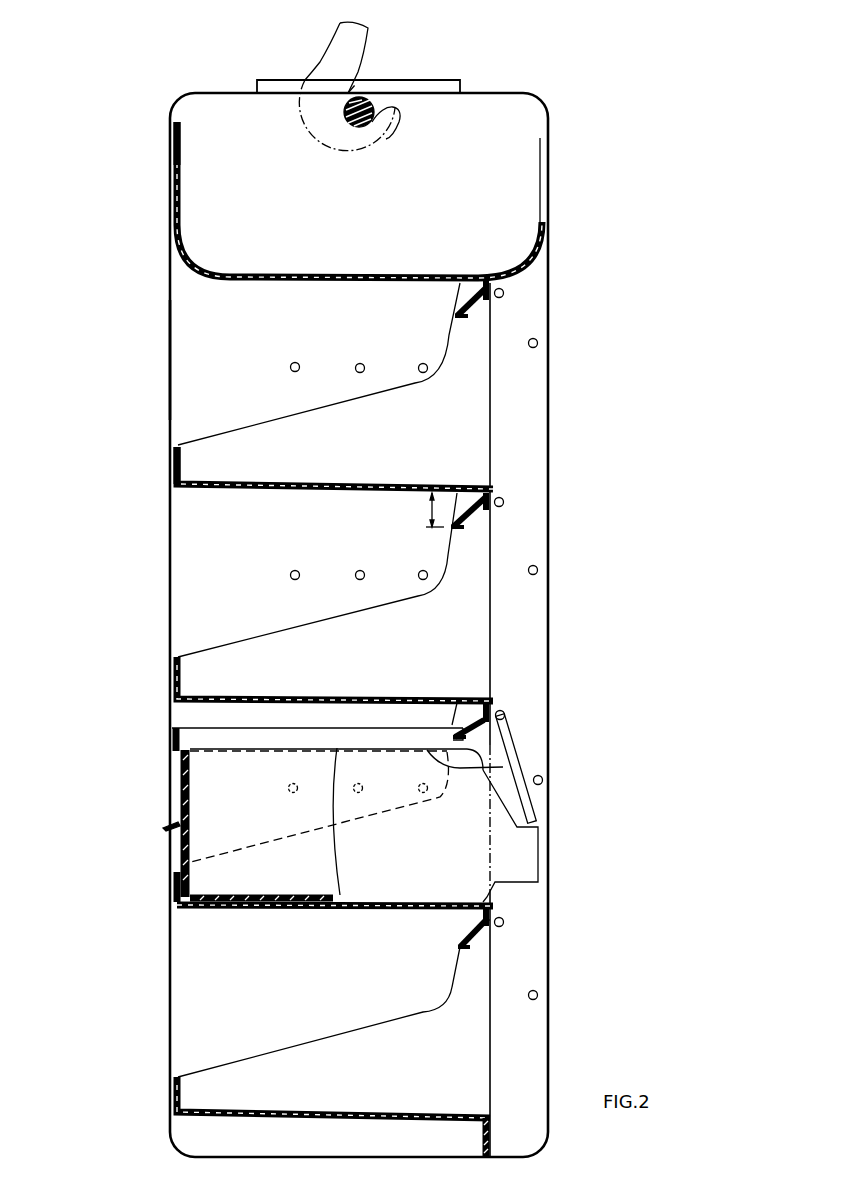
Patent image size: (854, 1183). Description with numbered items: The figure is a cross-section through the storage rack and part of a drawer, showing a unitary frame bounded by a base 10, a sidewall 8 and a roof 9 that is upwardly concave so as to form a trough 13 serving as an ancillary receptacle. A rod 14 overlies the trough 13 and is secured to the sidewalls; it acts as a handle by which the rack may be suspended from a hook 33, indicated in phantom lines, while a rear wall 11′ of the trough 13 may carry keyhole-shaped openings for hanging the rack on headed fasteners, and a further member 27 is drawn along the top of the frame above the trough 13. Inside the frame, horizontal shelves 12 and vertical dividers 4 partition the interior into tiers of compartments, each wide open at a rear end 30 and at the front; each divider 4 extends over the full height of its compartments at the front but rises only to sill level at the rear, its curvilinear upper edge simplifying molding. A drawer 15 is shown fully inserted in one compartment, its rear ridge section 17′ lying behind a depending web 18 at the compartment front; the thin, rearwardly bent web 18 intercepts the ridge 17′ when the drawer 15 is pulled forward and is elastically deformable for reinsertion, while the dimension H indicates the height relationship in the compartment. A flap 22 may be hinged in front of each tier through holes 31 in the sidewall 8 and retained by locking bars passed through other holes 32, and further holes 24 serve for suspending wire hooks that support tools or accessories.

The vertical divider 4 is at (225, 440).
The sidewall 8 is at (530, 403).
The roof 9 is at (418, 275).
The base 10 is at (427, 1113).
The rear wall of trough 11′ is at (173, 146).
The horizontal shelf 12 is at (438, 487).
The trough 13 is at (480, 187).
The rod 14 is at (386, 139).
The drawer 15 is at (165, 827).
The rear section of marginal ridge 17′ is at (173, 737).
The depending web 18 is at (469, 314).
The flap 22 is at (513, 745).
The hole 24 is at (357, 362).
The top flange 27 is at (457, 88).
The rear end of compartment 30 is at (193, 352).
The hole 31 is at (504, 293).
The hole 32 is at (543, 780).
The hook 33 is at (337, 57).
The height dimension H is at (430, 507).